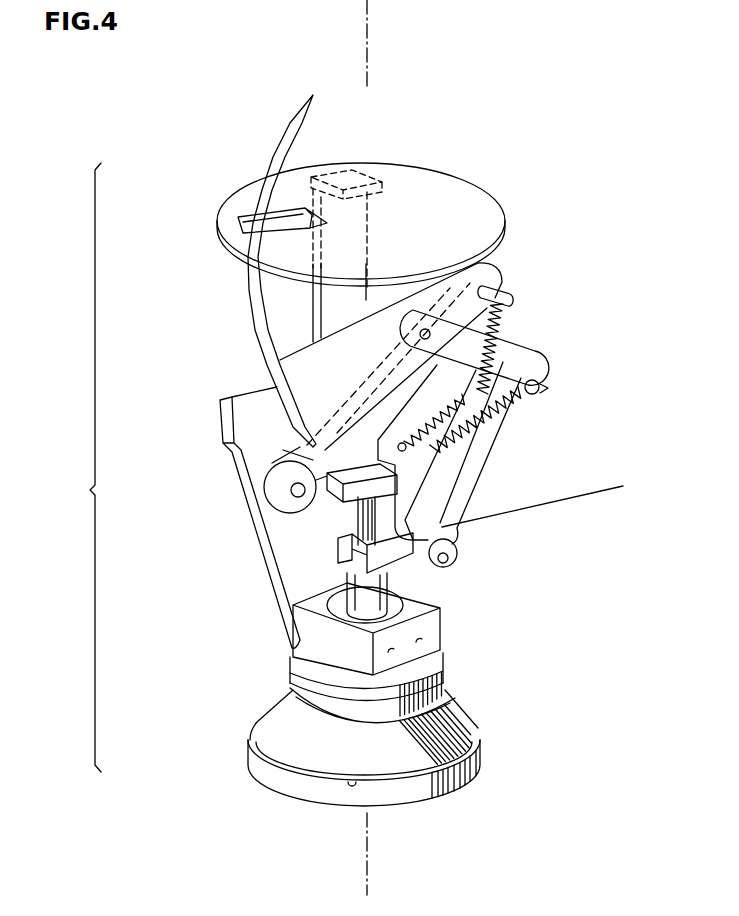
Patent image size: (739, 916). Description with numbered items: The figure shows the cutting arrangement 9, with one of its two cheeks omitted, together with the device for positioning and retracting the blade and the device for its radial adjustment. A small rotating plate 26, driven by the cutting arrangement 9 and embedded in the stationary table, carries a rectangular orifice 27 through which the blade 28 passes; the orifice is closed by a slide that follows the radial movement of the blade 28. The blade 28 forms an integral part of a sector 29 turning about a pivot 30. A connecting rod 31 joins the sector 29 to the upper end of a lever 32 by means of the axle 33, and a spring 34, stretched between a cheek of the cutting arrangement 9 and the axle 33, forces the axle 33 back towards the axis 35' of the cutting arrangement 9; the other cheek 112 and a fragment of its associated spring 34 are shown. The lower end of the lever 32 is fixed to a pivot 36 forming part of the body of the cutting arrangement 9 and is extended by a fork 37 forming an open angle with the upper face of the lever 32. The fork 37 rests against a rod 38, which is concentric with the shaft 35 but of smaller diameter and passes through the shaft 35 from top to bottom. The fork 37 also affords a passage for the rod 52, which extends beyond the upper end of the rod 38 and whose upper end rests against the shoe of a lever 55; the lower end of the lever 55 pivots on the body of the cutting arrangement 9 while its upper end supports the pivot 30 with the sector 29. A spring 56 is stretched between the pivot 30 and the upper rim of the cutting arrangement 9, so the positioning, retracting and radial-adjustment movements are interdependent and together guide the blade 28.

The cutting arrangement 9 is at (84, 467).
The small rotating plate 26 is at (487, 208).
The rectangular orifice 27 is at (327, 224).
The blade 28 is at (258, 314).
The sector 29 is at (310, 365).
The pivot 30 is at (513, 301).
The connecting rod 31 is at (510, 360).
The lever 32 is at (470, 455).
The axle 33 is at (548, 386).
The spring 34 is at (497, 413).
The shaft 35 is at (435, 729).
The axis of the cutting arrangement 35' is at (418, 450).
The pivot 36 is at (446, 558).
The fork 37 is at (392, 565).
The rod 38 is at (360, 598).
The rod 52 is at (365, 517).
The lever 55 is at (318, 463).
The spring 56 is at (495, 326).
The cheek 112 is at (263, 602).